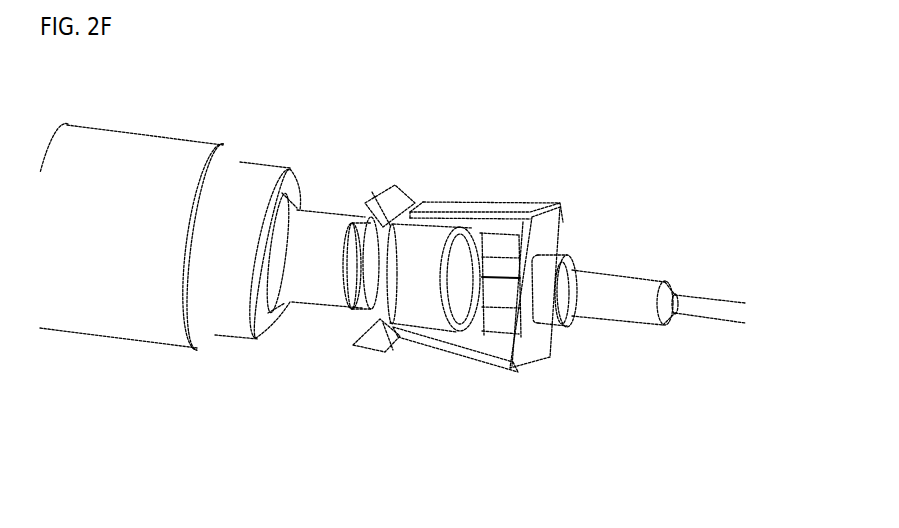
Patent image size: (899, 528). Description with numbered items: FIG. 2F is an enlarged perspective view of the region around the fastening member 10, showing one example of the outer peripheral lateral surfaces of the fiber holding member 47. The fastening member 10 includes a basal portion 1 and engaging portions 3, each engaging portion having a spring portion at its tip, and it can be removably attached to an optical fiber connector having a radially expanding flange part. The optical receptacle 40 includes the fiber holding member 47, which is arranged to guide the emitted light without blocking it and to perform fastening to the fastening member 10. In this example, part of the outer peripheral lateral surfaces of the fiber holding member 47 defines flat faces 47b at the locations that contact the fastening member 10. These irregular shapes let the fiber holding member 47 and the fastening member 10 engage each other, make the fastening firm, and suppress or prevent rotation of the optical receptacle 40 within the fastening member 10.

The basal portion 1 is at (540, 232).
The engaging portions 3 is at (498, 208).
The fastening member 10 is at (569, 235).
The optical receptacle 40 is at (277, 378).
The fiber holding member 47 is at (422, 298).
The flat faces 47b is at (430, 222).